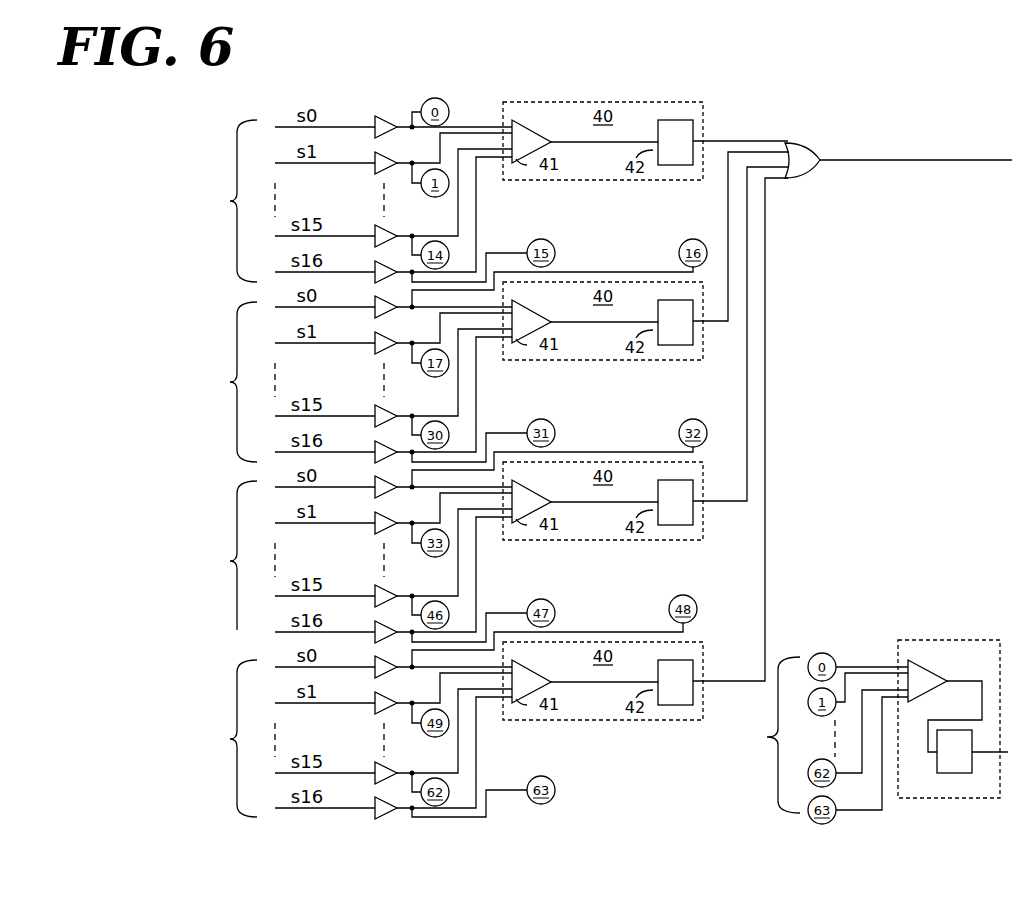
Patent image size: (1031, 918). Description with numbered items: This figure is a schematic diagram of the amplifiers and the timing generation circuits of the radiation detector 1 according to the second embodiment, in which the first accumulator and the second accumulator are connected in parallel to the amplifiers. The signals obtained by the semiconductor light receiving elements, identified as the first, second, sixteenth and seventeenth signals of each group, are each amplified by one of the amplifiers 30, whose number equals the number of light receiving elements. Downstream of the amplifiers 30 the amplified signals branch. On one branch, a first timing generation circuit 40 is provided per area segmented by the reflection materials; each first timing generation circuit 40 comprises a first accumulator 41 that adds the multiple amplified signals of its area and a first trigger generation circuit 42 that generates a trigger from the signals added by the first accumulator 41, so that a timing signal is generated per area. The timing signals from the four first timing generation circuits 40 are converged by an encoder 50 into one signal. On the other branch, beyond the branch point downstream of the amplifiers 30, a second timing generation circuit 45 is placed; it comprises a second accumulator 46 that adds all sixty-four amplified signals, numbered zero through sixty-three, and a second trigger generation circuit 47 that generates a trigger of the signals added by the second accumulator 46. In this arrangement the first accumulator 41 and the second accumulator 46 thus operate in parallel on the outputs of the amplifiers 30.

The radiation detector 1 is at (983, 123).
The amplifiers 30 is at (371, 459).
The first timing generation circuit 40 is at (603, 411).
The first accumulator 41 is at (535, 417).
The first trigger generation circuit 42 is at (622, 418).
The second timing generation circuit 45 is at (940, 663).
The second accumulator 46 is at (919, 700).
The second trigger generation circuit 47 is at (935, 760).
The encoder 50 is at (812, 171).